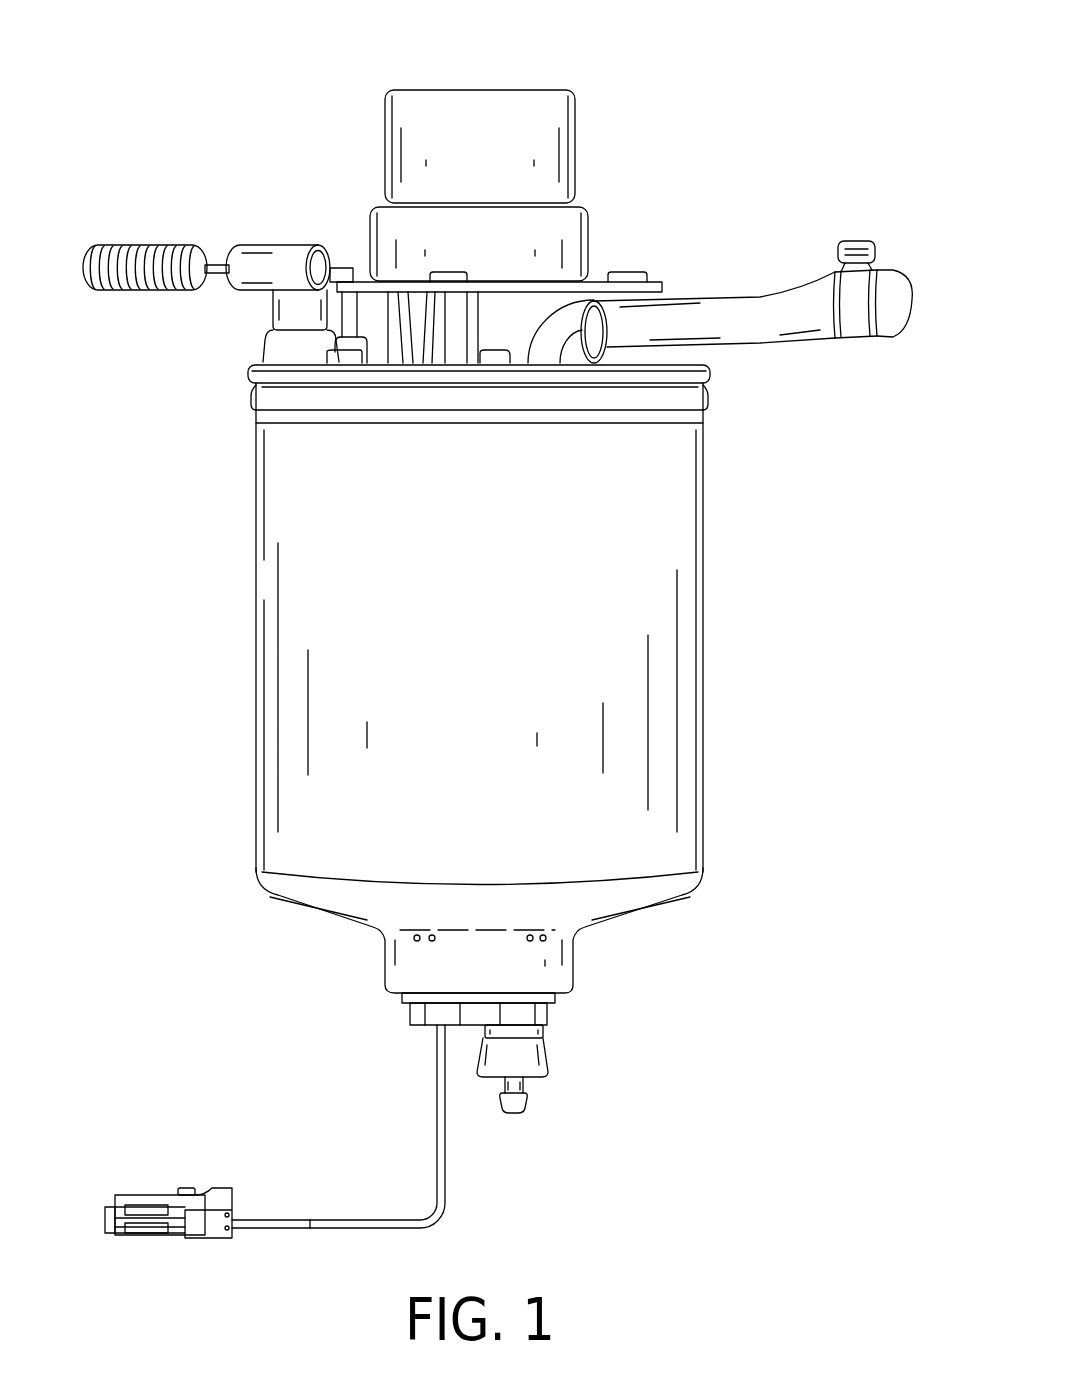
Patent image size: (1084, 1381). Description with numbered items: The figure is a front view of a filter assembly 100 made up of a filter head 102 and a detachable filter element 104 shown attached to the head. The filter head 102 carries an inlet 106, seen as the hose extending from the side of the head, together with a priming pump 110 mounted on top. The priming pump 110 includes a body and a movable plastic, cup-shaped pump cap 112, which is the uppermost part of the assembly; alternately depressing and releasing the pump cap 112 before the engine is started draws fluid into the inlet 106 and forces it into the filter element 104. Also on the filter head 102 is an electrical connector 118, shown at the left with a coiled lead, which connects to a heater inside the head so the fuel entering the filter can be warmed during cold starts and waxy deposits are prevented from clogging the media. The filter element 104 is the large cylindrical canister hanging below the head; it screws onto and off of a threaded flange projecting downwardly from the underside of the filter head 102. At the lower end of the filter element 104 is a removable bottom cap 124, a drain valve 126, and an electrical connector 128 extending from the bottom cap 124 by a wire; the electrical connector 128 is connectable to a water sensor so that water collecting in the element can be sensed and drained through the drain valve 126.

The filter assembly 100 is at (827, 99).
The priming pump 110 is at (626, 141).
The pump cap 112 is at (383, 156).
The filter head 102 is at (660, 283).
The filter element 104 is at (708, 690).
The inlet 106 is at (772, 333).
The electrical connector 118 is at (134, 245).
The bottom cap 124 is at (549, 1014).
The drain valve 126 is at (545, 1050).
The electrical connector 128 is at (214, 1195).